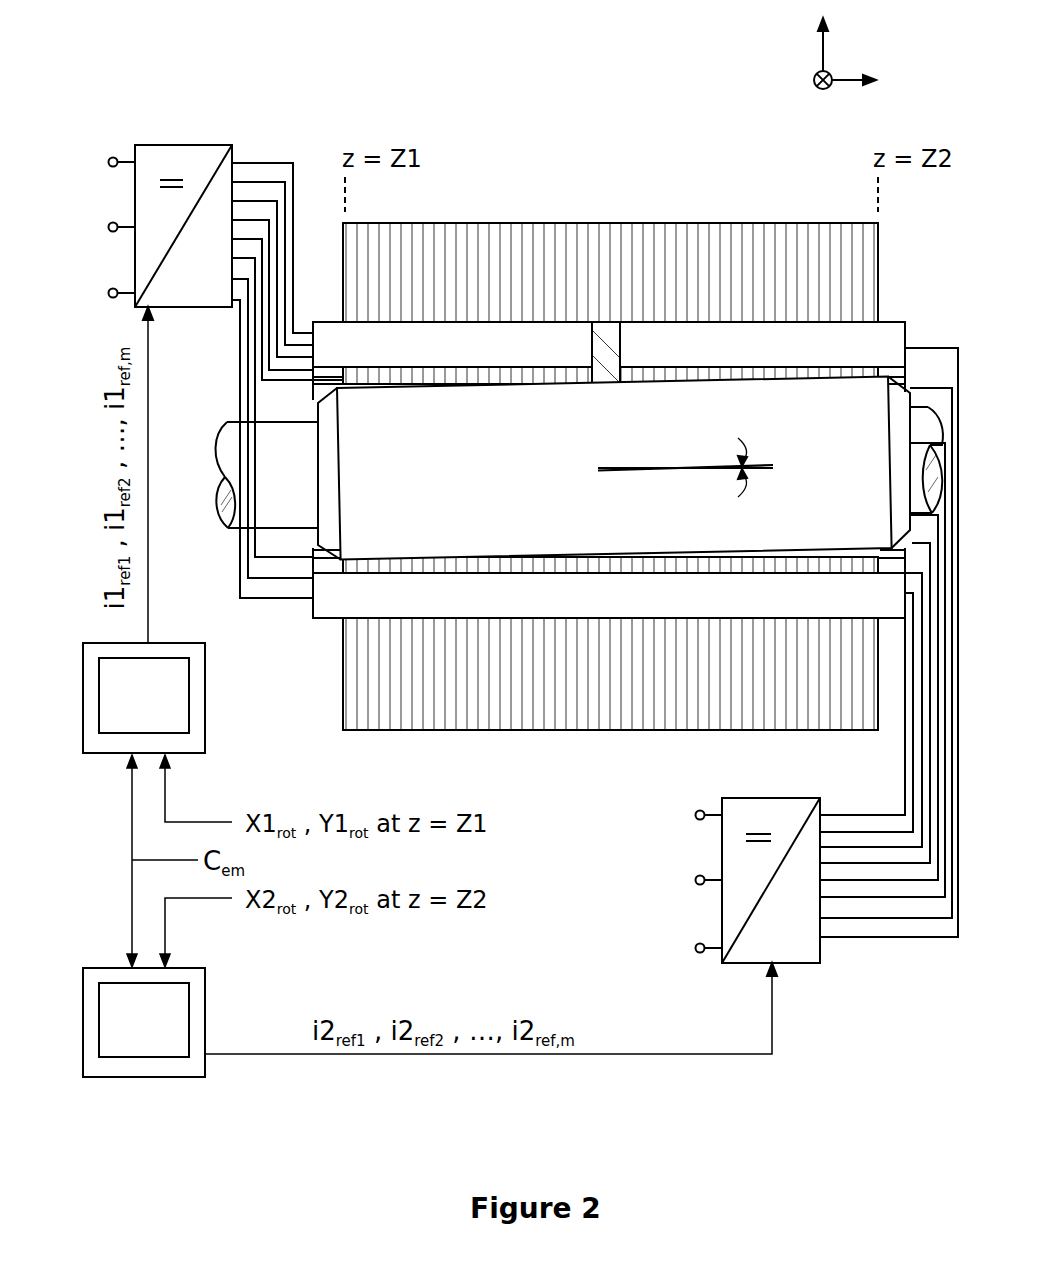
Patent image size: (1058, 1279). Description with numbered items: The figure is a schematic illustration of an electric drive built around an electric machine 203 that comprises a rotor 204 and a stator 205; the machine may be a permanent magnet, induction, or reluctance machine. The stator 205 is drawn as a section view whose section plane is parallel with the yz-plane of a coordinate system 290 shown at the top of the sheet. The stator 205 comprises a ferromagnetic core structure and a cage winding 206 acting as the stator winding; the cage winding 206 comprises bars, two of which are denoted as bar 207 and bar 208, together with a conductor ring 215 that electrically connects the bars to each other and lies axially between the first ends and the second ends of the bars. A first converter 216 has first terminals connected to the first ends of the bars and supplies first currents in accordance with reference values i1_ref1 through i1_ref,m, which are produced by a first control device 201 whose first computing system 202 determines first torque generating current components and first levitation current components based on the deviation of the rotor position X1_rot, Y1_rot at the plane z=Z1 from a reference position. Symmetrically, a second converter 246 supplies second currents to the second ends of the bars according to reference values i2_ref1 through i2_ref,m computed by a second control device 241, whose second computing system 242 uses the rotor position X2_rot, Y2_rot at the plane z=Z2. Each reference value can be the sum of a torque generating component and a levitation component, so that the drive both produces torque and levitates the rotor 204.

The first control device 201 is at (145, 660).
The first computing system 202 is at (144, 698).
The electric machine 203 is at (610, 449).
The rotor 204 is at (578, 468).
The stator 205 is at (493, 223).
The cage winding 206 is at (335, 618).
The bar of the cage winding 207 is at (609, 361).
The bar of the cage winding 208 is at (609, 583).
The conductor ring 215 is at (605, 322).
The first converter 216 is at (172, 145).
The second control device 241 is at (177, 1048).
The second computing system 242 is at (144, 1022).
The second converter 246 is at (765, 798).
The coordinate system 290 is at (847, 55).